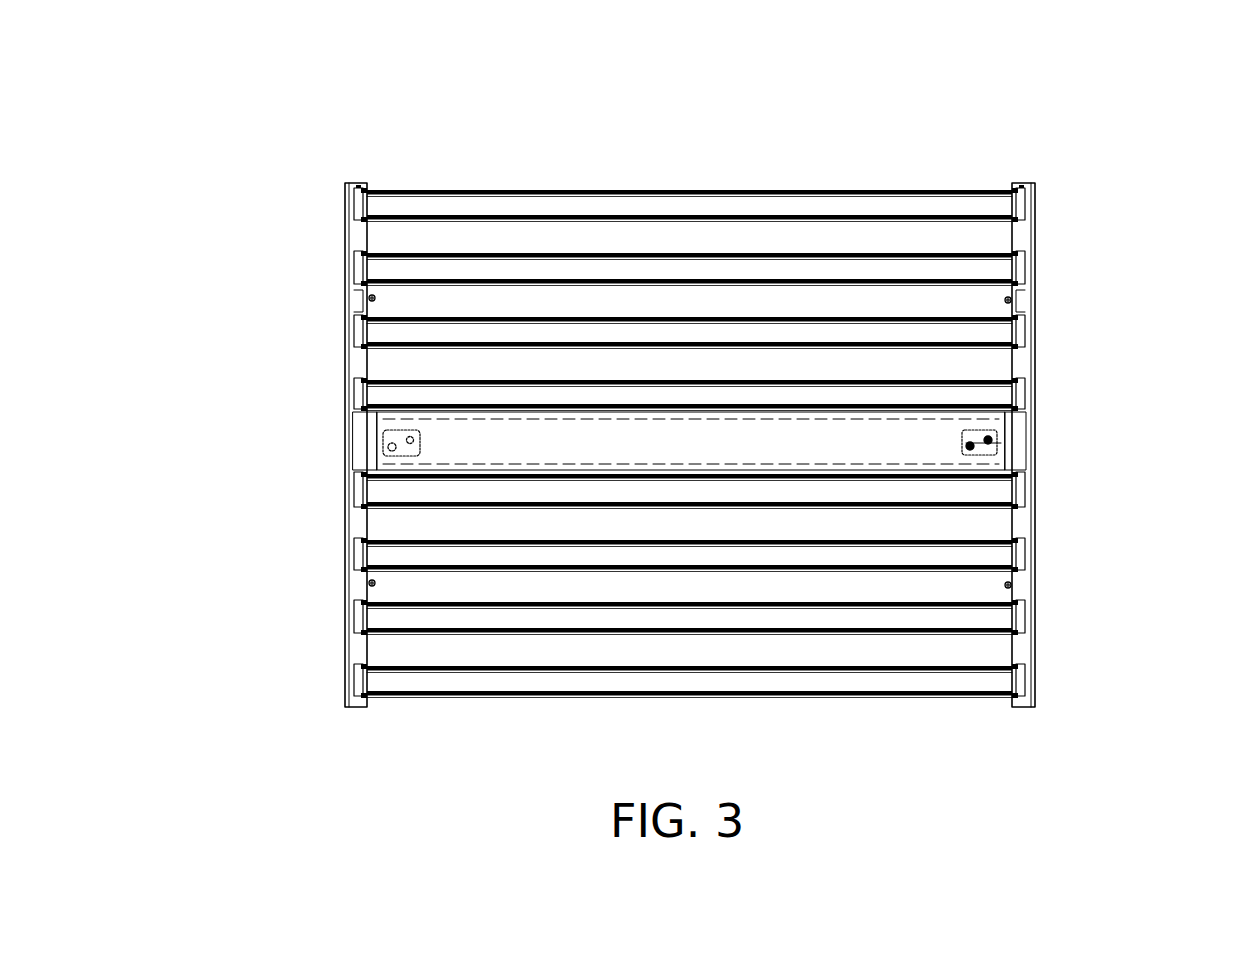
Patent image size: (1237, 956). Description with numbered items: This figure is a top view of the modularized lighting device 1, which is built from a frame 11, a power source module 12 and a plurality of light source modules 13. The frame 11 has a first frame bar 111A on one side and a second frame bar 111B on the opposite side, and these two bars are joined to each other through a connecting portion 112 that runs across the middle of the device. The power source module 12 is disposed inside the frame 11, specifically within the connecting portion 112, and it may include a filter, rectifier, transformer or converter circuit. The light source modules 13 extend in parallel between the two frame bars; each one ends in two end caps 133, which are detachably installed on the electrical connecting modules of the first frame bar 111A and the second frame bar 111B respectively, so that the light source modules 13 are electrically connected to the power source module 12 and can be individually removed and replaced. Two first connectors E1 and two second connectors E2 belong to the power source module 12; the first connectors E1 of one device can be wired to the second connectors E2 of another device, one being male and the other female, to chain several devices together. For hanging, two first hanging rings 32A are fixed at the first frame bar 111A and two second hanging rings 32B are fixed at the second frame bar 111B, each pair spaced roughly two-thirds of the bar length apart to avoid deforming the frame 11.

The modularized lighting device 1 is at (633, 154).
The frame 11 is at (352, 164).
The power source module 12 is at (365, 473).
The connecting portion 112 is at (1020, 462).
The light source module 13 is at (790, 207).
The end cap 133 is at (358, 265).
The first frame bar 111A is at (358, 305).
The second frame bar 111B is at (1022, 305).
The first hanging ring 32A is at (369, 299).
The second hanging ring 32B is at (1011, 300).
The first connector E1 is at (362, 398).
The second connector E2 is at (992, 440).